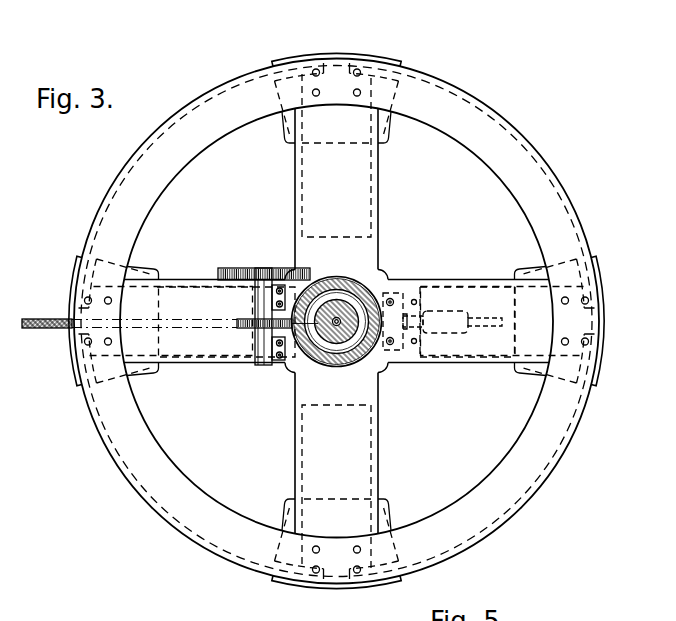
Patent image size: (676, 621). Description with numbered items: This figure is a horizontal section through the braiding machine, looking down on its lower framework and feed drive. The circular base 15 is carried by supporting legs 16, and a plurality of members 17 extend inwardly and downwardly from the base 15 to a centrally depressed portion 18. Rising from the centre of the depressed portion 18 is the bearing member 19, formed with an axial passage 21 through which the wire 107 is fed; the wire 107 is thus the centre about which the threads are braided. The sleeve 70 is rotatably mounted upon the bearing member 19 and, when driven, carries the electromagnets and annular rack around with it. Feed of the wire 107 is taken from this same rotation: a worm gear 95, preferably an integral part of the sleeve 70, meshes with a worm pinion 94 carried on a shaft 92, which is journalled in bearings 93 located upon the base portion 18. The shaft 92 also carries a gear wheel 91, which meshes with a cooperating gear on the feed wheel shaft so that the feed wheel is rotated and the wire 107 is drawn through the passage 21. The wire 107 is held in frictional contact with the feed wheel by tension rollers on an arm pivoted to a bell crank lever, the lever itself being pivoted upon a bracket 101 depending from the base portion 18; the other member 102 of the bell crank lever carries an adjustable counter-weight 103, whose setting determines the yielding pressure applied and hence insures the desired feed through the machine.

The base 15 is at (187, 160).
The supporting legs 16 is at (335, 55).
The members 17 is at (296, 203).
The centrally depressed portion 18 is at (376, 382).
The bearing member 19 is at (342, 340).
The axial passage 21 is at (338, 320).
The sleeve 70 is at (326, 284).
The gear wheel 91 is at (244, 268).
The shaft 92 is at (276, 268).
The bearings 93 is at (263, 351).
The worm pinion 94 is at (248, 319).
The worm gear 95 is at (301, 352).
The bracket 101 is at (406, 350).
The member of the bell crank lever 102 is at (482, 318).
The counter-weight 103 is at (453, 331).
The wire 107 is at (34, 330).